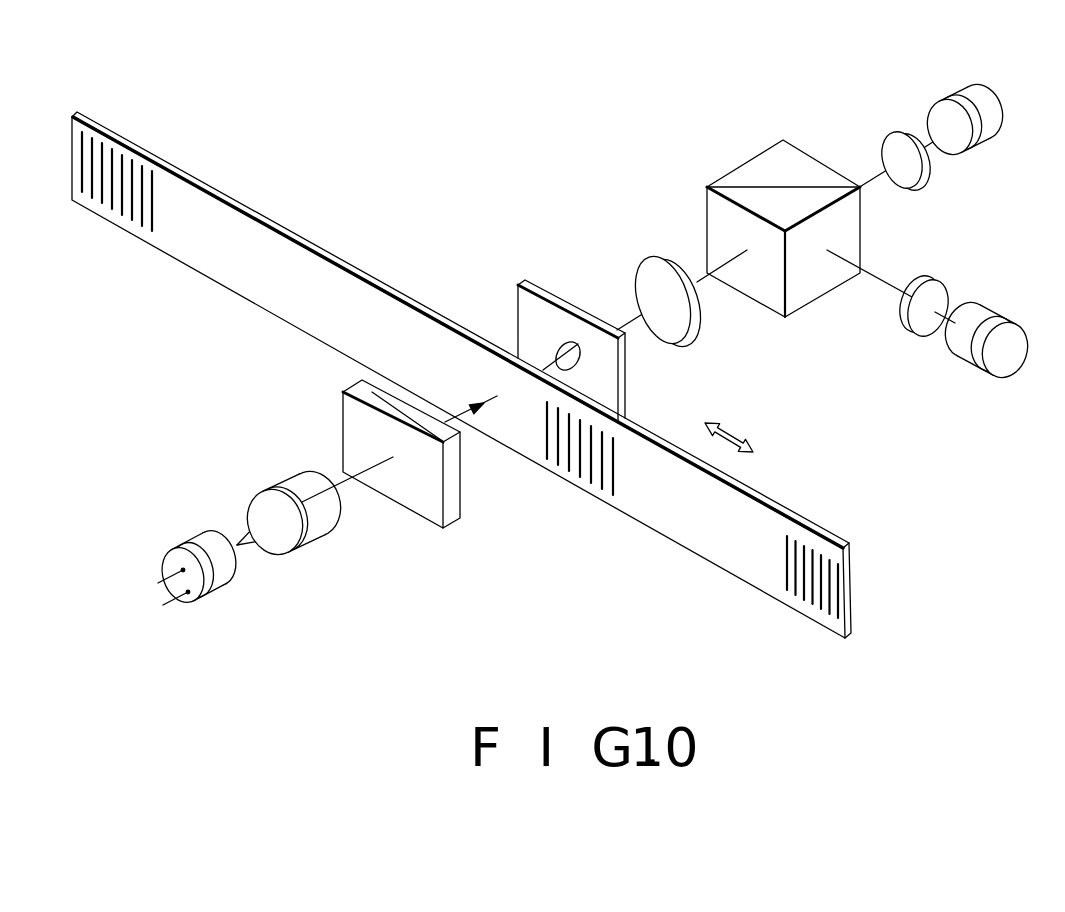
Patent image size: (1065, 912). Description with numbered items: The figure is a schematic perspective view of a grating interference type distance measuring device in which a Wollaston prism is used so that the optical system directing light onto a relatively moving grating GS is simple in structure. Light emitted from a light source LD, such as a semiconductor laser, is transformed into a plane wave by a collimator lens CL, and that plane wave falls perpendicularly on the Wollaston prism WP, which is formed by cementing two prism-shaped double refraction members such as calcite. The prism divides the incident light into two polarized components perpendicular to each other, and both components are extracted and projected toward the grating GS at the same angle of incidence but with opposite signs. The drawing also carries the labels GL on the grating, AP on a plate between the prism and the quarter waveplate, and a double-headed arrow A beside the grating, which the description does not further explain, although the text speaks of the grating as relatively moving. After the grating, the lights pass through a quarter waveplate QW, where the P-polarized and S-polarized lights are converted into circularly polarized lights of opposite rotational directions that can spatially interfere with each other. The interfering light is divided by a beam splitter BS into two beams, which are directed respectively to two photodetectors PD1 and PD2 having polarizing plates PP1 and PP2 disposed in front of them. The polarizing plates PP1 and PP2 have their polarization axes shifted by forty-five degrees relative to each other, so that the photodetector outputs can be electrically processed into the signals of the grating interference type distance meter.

The grating GS is at (718, 567).
The grating lines GL is at (828, 562).
The light source LD is at (200, 542).
The collimator lens CL is at (283, 480).
The Wollaston prism WP is at (353, 427).
The aperture plate AP is at (545, 297).
The quarter waveplate QW is at (652, 270).
The beam splitter BS is at (772, 160).
The polarizing plate PP1 is at (902, 142).
The photodetector PD1 is at (973, 98).
The polarizing plate PP2 is at (943, 293).
The photodetector PD2 is at (995, 325).
The direction of movement A is at (729, 425).